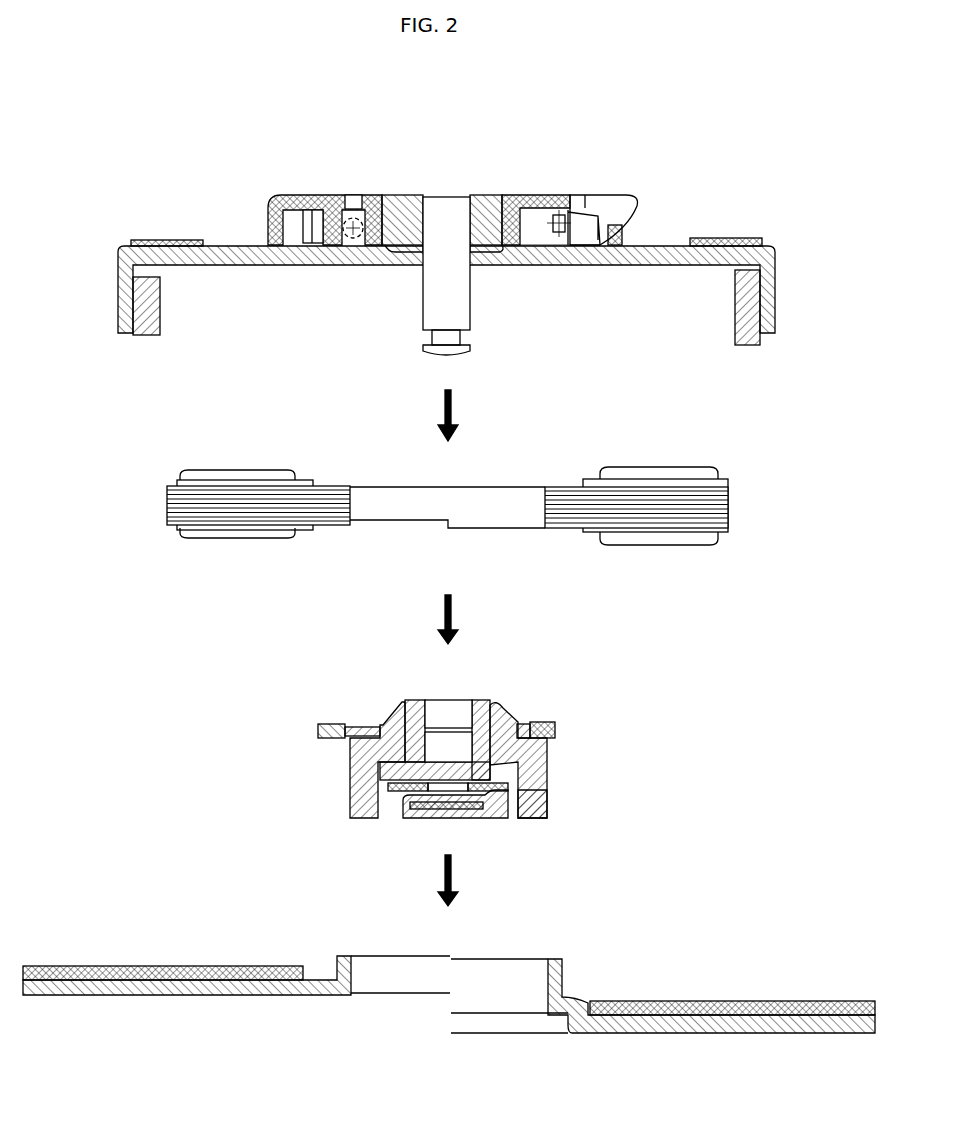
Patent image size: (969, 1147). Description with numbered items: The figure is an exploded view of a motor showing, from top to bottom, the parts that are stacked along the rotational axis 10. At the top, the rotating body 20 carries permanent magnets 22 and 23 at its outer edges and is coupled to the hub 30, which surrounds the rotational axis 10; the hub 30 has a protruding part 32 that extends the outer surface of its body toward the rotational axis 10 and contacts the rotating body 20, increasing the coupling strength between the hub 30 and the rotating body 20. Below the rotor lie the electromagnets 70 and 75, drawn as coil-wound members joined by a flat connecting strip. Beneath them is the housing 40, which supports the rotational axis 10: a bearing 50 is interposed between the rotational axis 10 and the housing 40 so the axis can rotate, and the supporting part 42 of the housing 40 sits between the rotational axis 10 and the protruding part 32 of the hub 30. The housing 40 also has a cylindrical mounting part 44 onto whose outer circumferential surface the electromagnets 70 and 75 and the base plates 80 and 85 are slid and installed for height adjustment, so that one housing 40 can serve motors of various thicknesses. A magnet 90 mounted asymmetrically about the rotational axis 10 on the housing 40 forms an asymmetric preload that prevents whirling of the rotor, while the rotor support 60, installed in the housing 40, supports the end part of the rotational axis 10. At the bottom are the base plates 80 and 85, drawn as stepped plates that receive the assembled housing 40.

The rotational axis 10 is at (460, 197).
The rotating body 20 is at (665, 245).
The permanent magnet 22 is at (778, 312).
The permanent magnet 23 is at (162, 312).
The hub 30 is at (500, 195).
The protruding part 32 is at (493, 253).
The electromagnet 70 is at (657, 487).
The electromagnet 75 is at (237, 492).
The housing 40 is at (548, 783).
The supporting part 42 is at (500, 704).
The cylindrical mounting part 44 is at (548, 800).
The bearing 50 is at (482, 700).
The rotor support 60 is at (505, 800).
The magnet 90 is at (552, 722).
The base plate 80 is at (790, 1033).
The base plate 85 is at (137, 997).